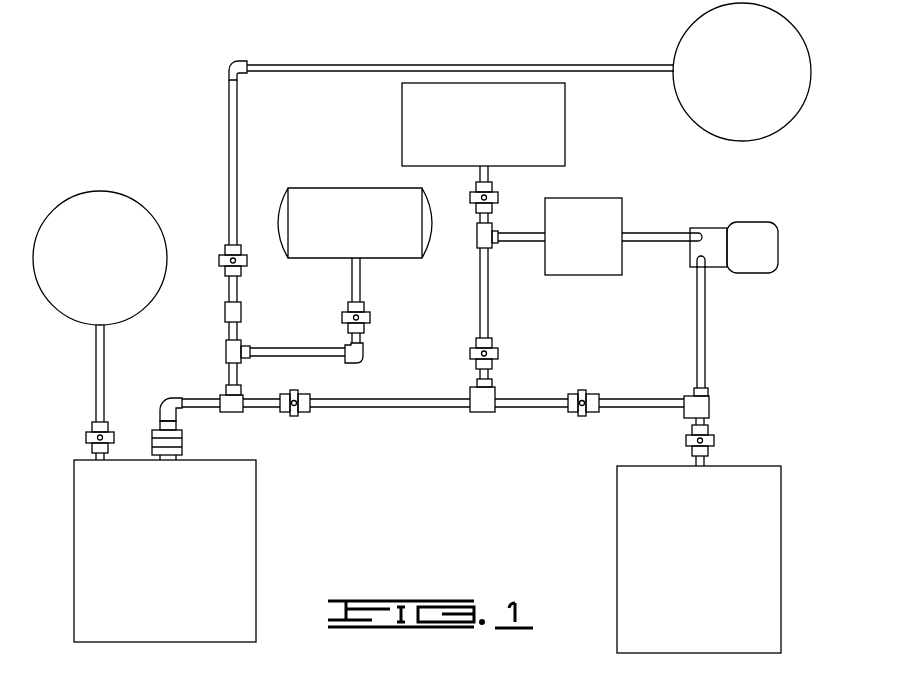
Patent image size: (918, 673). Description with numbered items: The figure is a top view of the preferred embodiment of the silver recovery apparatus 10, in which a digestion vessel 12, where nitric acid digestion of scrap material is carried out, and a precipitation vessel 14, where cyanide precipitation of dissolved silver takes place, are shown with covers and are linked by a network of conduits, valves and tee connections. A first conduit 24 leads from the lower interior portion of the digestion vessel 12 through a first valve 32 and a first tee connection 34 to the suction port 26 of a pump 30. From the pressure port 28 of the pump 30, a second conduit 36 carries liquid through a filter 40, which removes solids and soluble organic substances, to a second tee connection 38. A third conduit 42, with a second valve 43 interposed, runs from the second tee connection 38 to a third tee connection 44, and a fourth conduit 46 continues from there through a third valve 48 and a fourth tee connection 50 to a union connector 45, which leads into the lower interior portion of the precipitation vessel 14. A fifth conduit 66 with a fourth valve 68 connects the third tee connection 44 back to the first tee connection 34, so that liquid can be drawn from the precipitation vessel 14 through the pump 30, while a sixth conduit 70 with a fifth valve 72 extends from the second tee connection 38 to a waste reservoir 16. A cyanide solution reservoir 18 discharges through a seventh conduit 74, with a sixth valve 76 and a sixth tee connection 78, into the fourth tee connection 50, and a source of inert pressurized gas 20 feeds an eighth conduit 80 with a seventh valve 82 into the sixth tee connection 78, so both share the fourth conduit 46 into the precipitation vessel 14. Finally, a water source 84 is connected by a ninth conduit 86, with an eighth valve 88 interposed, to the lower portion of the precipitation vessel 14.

The silver recovery apparatus 10 is at (533, 60).
The digestion vessel 12 is at (690, 548).
The precipitation vessel 14 is at (150, 548).
The waste reservoir 16 is at (475, 129).
The cyanide solution reservoir 18 is at (733, 69).
The source of inert pressurized gas 20 is at (344, 231).
The first conduit 24 is at (705, 332).
The suction port 26 is at (696, 262).
The pressure port 28 is at (704, 228).
The pump 30 is at (742, 255).
The first valve 32 is at (714, 441).
The first tee connection 34 is at (709, 404).
The second conduit 36 is at (670, 232).
The second tee connection 38 is at (477, 236).
The filter 40 is at (573, 244).
The third conduit 42 is at (490, 320).
The second valve 43 is at (498, 353).
The third tee connection 44 is at (482, 412).
The union connector 45 is at (182, 442).
The fourth conduit 46 is at (389, 408).
The third valve 48 is at (295, 416).
The fourth tee connection 50 is at (239, 408).
The fifth conduit 66 is at (531, 408).
The fourth valve 68 is at (582, 416).
The sixth conduit 70 is at (490, 219).
The fifth valve 72 is at (498, 196).
The seventh conduit 74 is at (229, 108).
The sixth valve 76 is at (219, 260).
The sixth tee connection 78 is at (228, 350).
The eighth conduit 80 is at (360, 283).
The seventh valve 82 is at (370, 318).
The water source 84 is at (90, 253).
The ninth conduit 86 is at (96, 366).
The eighth valve 88 is at (86, 438).